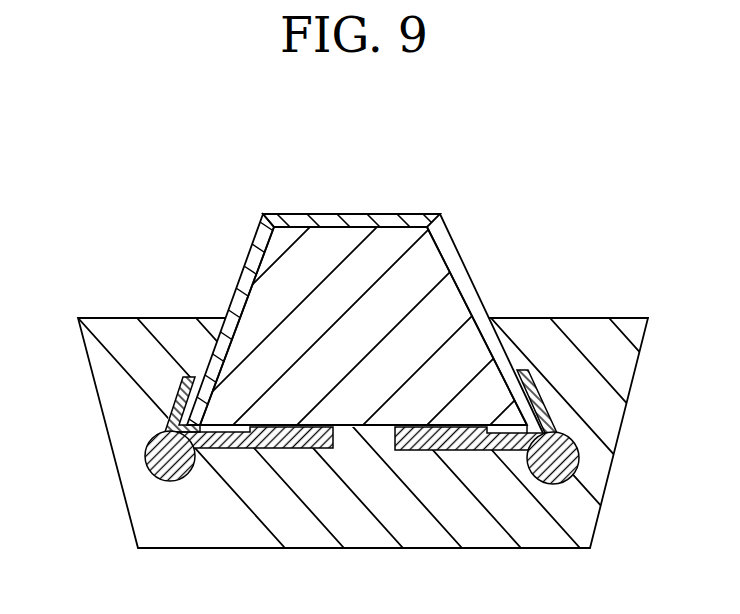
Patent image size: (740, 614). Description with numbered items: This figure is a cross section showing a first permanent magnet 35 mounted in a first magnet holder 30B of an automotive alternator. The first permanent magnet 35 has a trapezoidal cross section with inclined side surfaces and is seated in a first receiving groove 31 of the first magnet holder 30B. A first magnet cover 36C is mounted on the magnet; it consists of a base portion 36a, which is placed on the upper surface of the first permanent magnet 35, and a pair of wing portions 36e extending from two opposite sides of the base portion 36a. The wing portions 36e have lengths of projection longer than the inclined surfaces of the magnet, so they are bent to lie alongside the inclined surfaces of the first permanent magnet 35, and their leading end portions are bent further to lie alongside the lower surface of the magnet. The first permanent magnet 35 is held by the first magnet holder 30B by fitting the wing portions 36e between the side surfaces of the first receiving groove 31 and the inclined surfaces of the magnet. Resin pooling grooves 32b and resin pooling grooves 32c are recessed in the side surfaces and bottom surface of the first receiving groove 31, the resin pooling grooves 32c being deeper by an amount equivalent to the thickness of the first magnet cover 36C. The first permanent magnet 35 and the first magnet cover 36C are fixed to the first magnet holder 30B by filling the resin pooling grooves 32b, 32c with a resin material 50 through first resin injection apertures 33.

The first magnet holder 30B is at (620, 303).
The first receiving groove 31 is at (502, 347).
The resin pooling grooves 32b is at (172, 405).
The resin pooling grooves 32c is at (277, 448).
The first resin injection apertures 33 is at (165, 468).
The first permanent magnet 35 is at (435, 268).
The base portion 36a is at (323, 218).
The first magnet cover 36C is at (378, 200).
The wing portions 36e is at (255, 262).
The resin material 50 is at (560, 443).